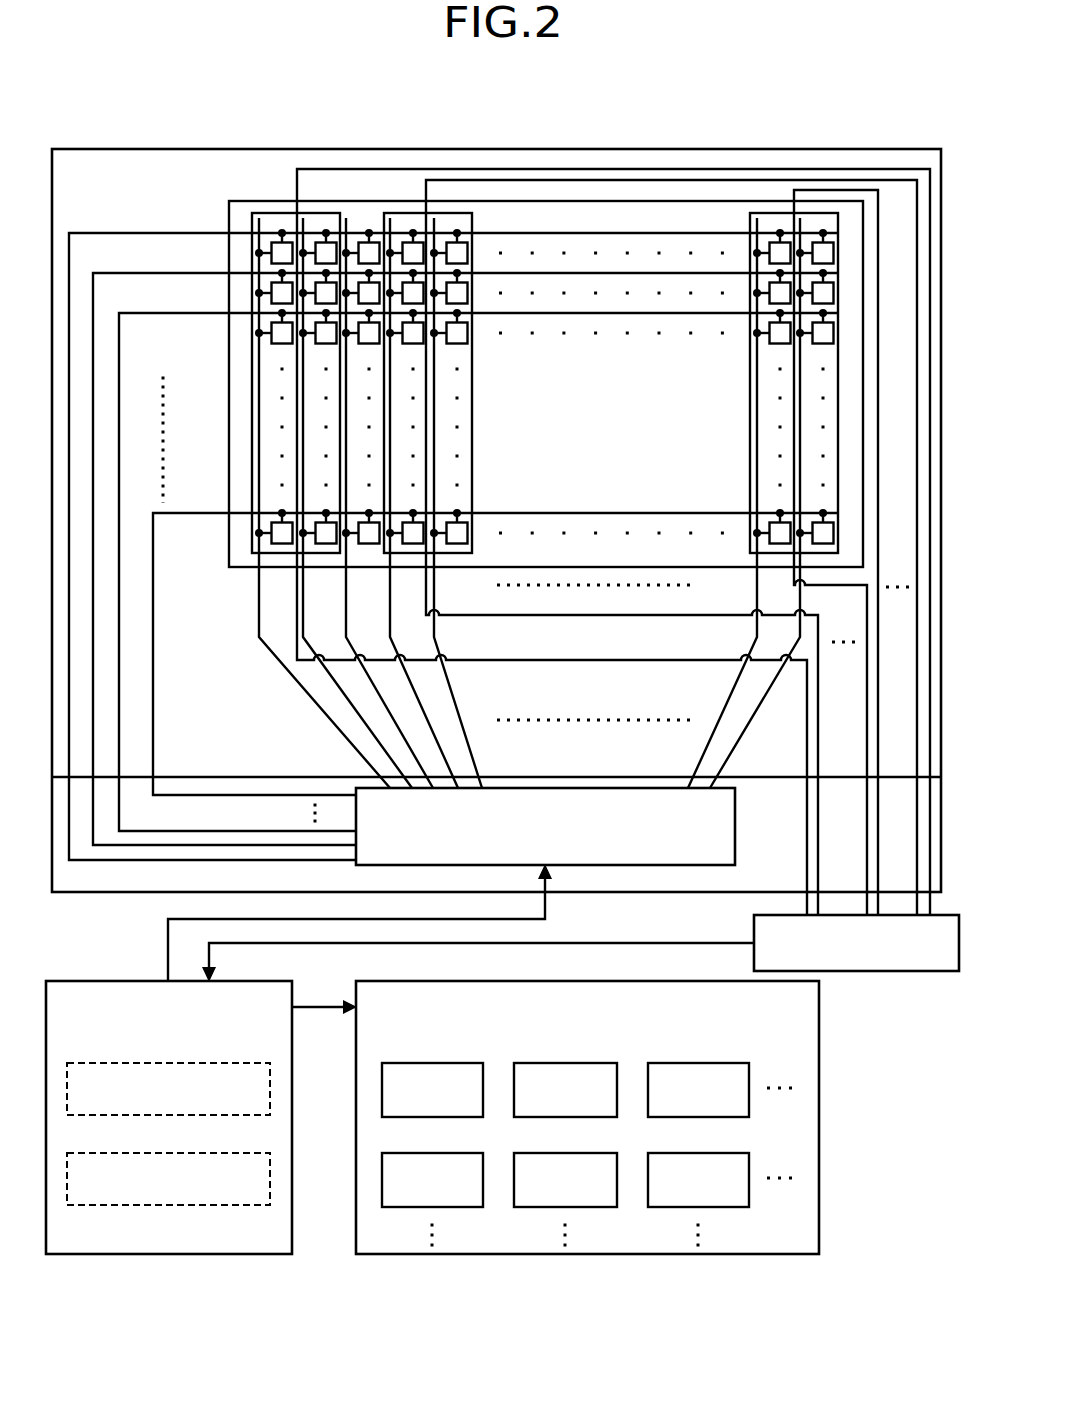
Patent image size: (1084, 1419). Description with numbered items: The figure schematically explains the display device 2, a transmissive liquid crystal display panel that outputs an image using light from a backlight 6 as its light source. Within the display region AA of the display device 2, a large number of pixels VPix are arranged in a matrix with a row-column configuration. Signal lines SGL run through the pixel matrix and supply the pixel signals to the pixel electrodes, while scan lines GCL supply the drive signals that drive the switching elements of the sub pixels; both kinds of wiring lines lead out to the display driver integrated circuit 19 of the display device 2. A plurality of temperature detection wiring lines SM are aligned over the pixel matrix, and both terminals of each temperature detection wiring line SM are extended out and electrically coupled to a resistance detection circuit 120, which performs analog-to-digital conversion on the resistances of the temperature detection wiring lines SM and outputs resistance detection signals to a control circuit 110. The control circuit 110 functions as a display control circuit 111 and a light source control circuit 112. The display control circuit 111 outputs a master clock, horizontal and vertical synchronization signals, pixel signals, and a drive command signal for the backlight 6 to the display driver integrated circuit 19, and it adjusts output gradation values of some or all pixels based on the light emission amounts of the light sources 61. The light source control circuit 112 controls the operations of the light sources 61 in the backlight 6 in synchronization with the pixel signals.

The display device 2 is at (532, 149).
The display driver integrated circuit 19 is at (735, 812).
The resistance detection circuit 120 is at (892, 972).
The control circuit 110 is at (246, 962).
The display control circuit 111 is at (214, 1062).
The light source control circuit 112 is at (214, 1152).
The backlight 6 is at (820, 1005).
The light source 61 is at (382, 1087).
The temperature detection wiring line SM is at (270, 208).
The scan line GCL is at (144, 232).
The signal line SGL is at (257, 590).
The pixel VPix is at (468, 340).
The display region AA is at (712, 571).